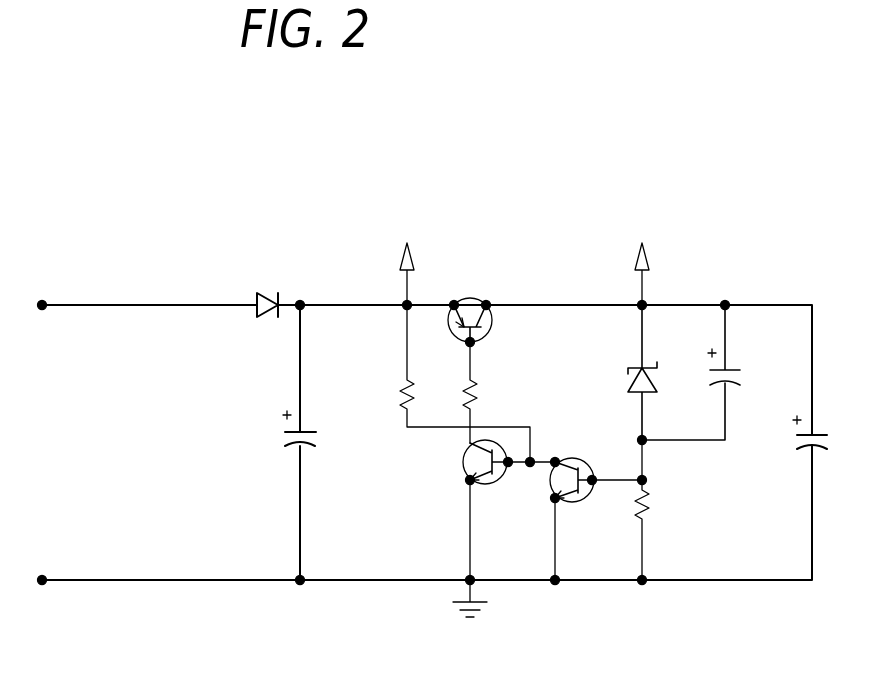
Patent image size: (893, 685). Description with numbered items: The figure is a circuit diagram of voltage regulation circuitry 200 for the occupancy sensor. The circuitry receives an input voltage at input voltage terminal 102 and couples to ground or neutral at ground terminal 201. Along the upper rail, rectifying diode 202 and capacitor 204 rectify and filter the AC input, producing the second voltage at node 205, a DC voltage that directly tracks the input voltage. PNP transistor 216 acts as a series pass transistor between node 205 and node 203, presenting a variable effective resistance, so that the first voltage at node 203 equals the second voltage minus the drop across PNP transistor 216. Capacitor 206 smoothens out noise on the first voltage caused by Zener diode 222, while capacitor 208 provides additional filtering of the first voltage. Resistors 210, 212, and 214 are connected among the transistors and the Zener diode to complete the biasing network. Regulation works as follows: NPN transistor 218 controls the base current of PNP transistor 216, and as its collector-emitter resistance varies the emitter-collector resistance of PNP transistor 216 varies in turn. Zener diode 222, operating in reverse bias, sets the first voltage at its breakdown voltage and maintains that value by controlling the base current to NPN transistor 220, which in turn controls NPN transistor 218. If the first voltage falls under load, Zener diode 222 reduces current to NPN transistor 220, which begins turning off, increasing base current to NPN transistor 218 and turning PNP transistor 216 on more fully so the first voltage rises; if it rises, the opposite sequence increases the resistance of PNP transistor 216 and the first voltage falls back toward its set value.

The voltage regulation circuitry 200 is at (615, 158).
The input voltage terminal 102 is at (43, 304).
The ground terminal 201 is at (43, 579).
The rectifying diode 202 is at (258, 302).
The node 203 is at (644, 304).
The capacitor 204 is at (293, 442).
The node 205 is at (407, 305).
The capacitor 206 is at (730, 370).
The capacitor 208 is at (806, 446).
The resistor 210 is at (407, 382).
The resistor 212 is at (474, 392).
The resistor 214 is at (646, 504).
The PNP transistor 216 is at (490, 322).
The NPN transistor 218 is at (466, 470).
The NPN transistor 220 is at (598, 447).
The Zener diode 222 is at (648, 388).